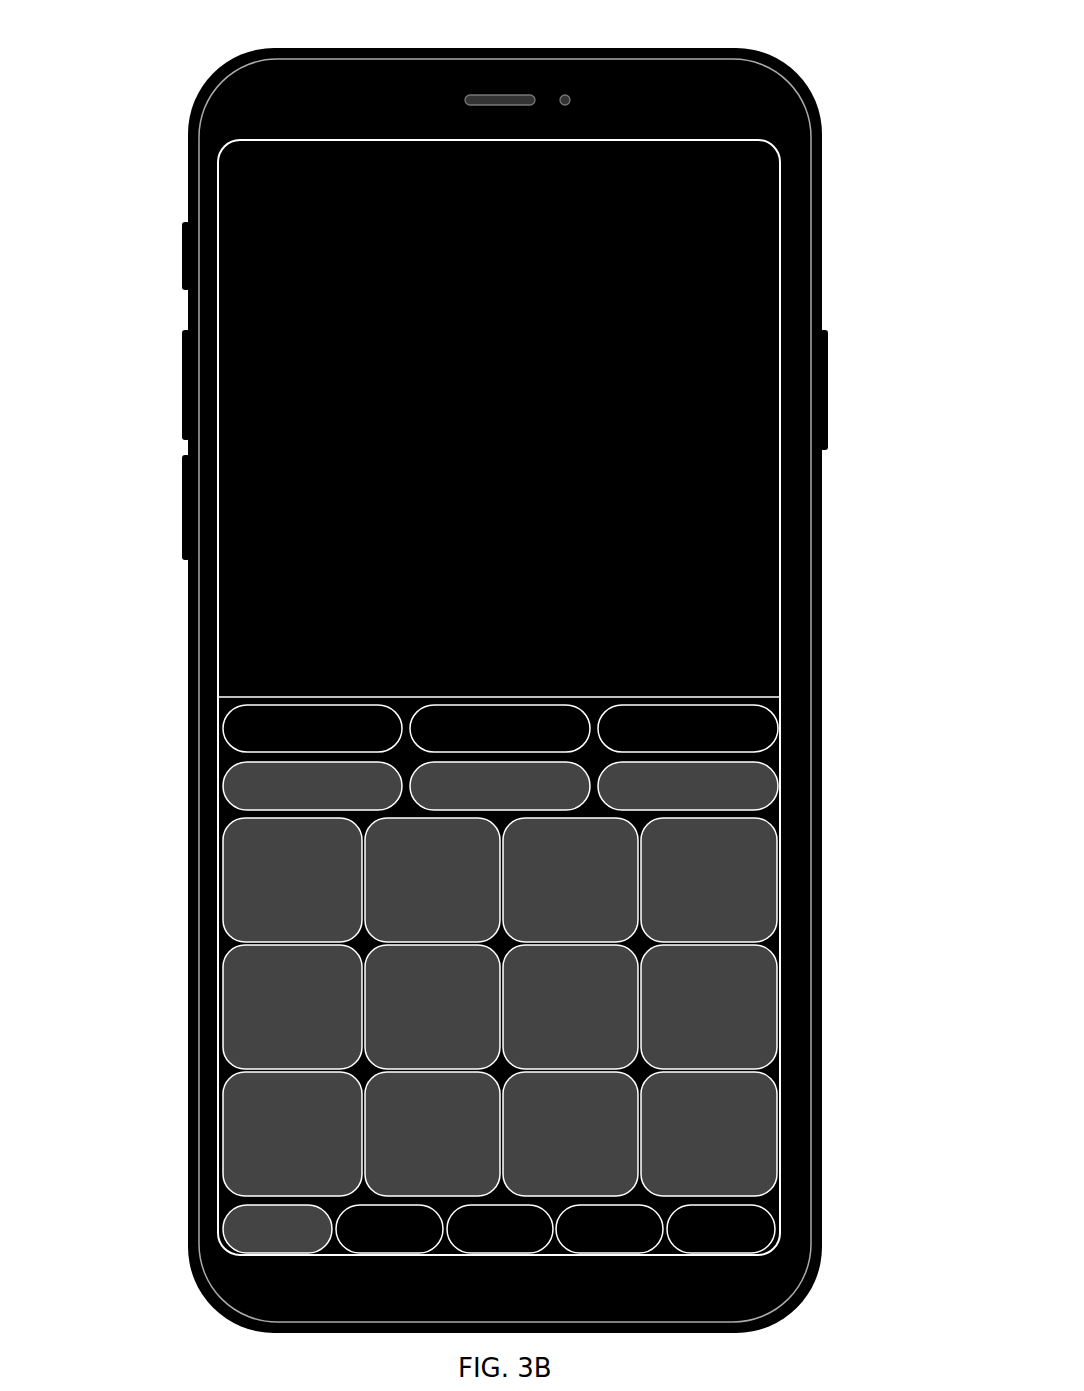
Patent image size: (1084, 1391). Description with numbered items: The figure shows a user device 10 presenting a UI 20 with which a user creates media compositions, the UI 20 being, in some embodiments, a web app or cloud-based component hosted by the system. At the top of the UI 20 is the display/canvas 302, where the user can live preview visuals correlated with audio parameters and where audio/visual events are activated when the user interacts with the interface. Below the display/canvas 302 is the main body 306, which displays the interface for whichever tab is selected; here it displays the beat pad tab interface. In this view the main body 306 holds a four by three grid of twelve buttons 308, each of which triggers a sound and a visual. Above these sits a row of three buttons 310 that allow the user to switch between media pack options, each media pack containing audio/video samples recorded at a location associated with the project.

The user device 10 is at (502, 666).
The UI 20 is at (222, 786).
The display/canvas 302 is at (778, 538).
The main body 306 is at (588, 985).
The buttons 308 is at (772, 887).
The buttons 310 is at (778, 768).